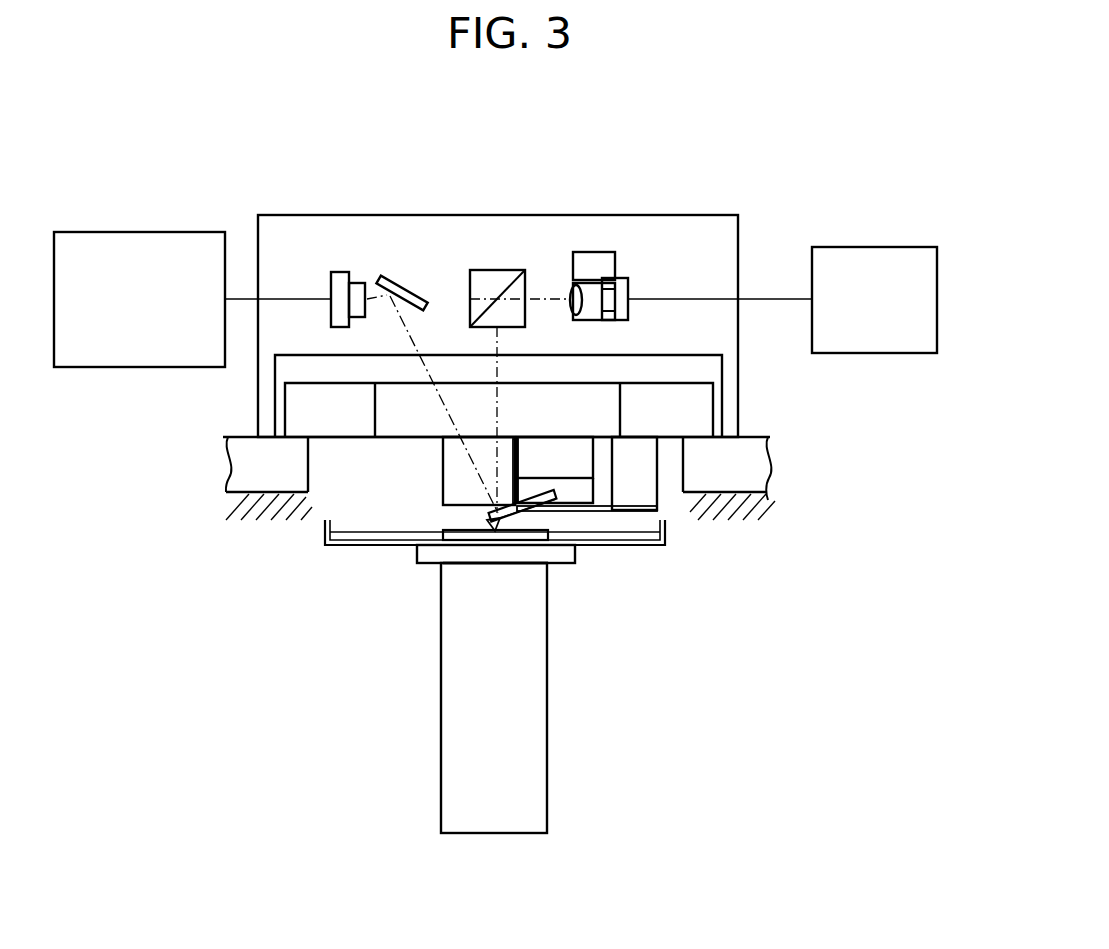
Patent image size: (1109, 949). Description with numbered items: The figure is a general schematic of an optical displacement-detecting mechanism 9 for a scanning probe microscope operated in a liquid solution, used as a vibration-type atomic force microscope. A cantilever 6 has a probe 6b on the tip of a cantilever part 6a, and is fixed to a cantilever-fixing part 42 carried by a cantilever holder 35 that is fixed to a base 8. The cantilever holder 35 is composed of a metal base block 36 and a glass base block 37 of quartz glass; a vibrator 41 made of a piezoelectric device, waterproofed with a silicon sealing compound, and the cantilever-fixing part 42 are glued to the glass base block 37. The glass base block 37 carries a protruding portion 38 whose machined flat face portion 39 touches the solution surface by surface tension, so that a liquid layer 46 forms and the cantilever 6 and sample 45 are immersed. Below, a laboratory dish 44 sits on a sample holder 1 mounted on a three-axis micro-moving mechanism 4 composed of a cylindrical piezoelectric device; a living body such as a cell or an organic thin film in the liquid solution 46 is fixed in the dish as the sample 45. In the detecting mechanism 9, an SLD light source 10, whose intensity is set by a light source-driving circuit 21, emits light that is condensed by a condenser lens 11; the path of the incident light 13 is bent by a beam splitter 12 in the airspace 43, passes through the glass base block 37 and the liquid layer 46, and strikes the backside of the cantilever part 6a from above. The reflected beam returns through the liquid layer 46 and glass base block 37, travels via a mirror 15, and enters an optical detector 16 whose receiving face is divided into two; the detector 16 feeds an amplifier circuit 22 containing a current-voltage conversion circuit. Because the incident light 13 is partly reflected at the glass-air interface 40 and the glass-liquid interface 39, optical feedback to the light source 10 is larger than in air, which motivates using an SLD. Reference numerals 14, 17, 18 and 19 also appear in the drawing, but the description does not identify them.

The sample holder 1 is at (533, 568).
The three-axis micro-moving mechanism 4 is at (531, 760).
The cantilever 6 is at (547, 514).
The cantilever part 6a is at (495, 514).
The probe 6b is at (497, 524).
The base 8 is at (748, 466).
The optical displacement-detecting mechanism 9 is at (676, 137).
The light source 10 is at (625, 294).
The condenser lens 11 is at (572, 293).
The beam splitter 12 is at (490, 286).
The incident light 13 is at (501, 408).
The reflected light path 14 is at (428, 371).
The mirror 15 is at (413, 287).
The optical detector 16 is at (358, 296).
The light source holder 17 is at (597, 263).
The photodetector 18 is at (337, 286).
The light source lead 19 is at (605, 320).
The light source-driving circuit 21 is at (893, 247).
The amplifier circuit 22 is at (135, 232).
The cantilever holder 35 is at (694, 408).
The metal base block 36 is at (302, 428).
The glass base block 37 is at (388, 412).
The protruding portion 38 is at (463, 478).
The flat face portion 39 is at (463, 508).
The interface of glass base block and airspace 40 is at (487, 381).
The vibrator 41 is at (582, 457).
The cantilever-fixing part 42 is at (582, 488).
The airspace 43 is at (553, 370).
The laboratory dish 44 is at (328, 548).
The sample 45 is at (513, 565).
The liquid solution 46 is at (411, 533).